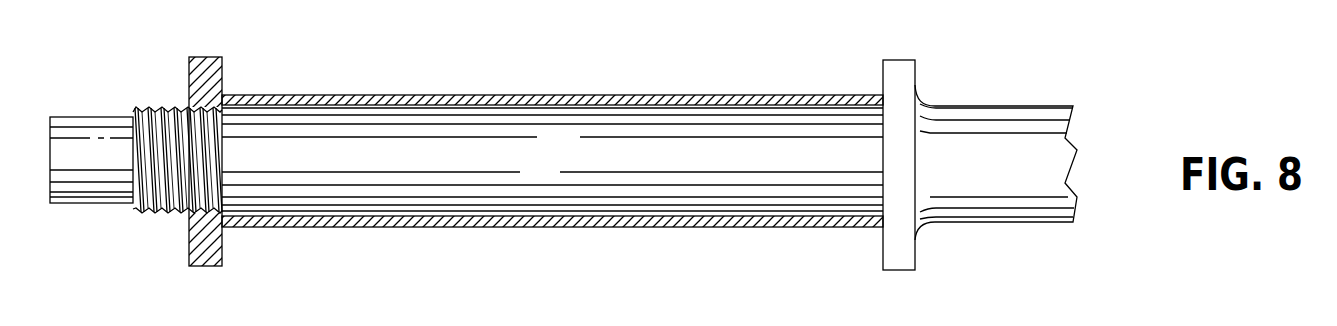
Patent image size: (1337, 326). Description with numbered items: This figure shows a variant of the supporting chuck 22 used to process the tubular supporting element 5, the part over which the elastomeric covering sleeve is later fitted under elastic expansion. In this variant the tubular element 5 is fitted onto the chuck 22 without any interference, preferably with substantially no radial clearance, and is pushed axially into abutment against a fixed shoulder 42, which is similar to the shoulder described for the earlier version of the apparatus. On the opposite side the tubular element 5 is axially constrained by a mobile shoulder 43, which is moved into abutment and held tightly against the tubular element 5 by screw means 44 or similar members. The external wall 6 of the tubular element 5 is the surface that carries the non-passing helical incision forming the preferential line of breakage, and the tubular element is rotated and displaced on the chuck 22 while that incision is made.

The tubular supporting element 5 is at (552, 125).
The external wall 6 is at (692, 97).
The supporting chuck 22 is at (510, 135).
The fixed shoulder 42 is at (902, 87).
The mobile shoulder 43 is at (191, 77).
The screw means 44 is at (170, 197).